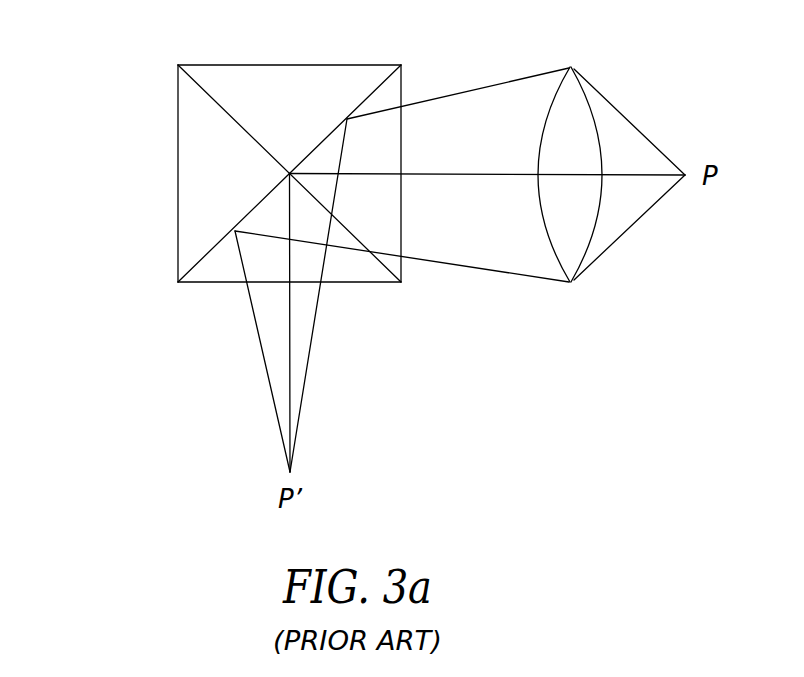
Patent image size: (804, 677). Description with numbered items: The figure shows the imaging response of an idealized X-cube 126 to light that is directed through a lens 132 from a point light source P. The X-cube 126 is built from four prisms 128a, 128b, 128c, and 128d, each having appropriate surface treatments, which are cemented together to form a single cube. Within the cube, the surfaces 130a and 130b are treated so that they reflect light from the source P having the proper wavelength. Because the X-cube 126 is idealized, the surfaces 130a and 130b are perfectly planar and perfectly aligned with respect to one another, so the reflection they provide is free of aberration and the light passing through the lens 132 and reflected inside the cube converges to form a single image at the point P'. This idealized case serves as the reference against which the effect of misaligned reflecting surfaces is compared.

The X-cube 126 is at (178, 127).
The prism 128a is at (195, 200).
The prism 128b is at (357, 283).
The prism 128c is at (293, 65).
The prism 128d is at (402, 265).
The surface 130a is at (392, 80).
The surface 130b is at (212, 272).
The lens 132 is at (577, 281).